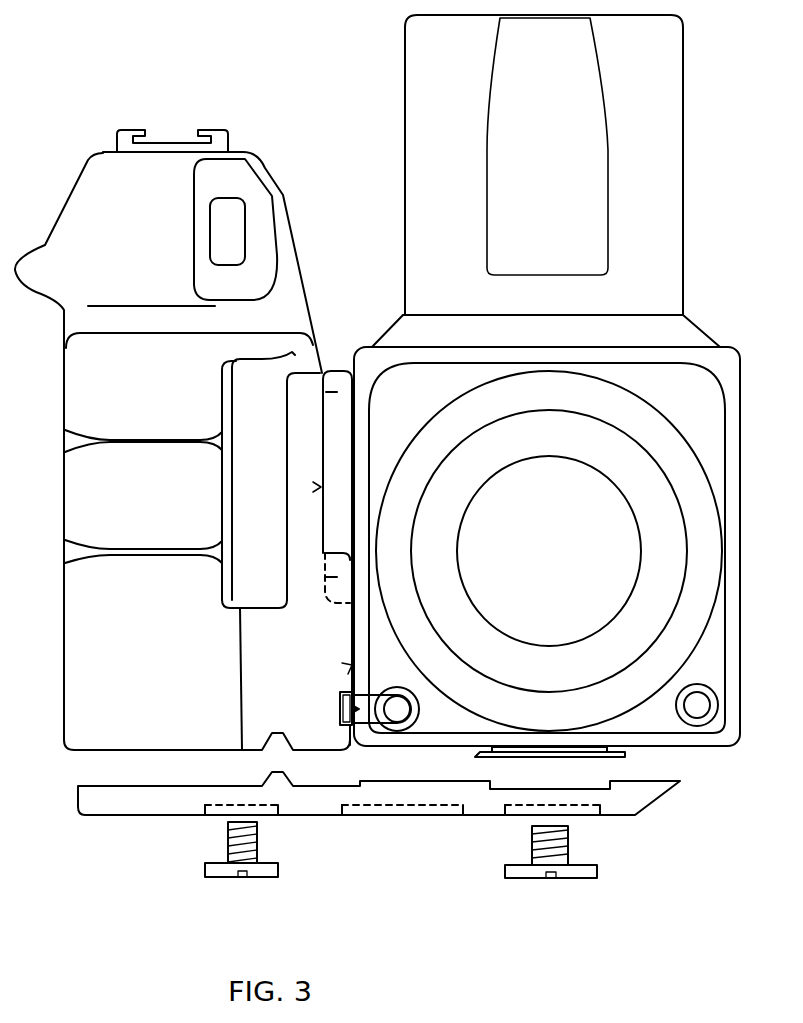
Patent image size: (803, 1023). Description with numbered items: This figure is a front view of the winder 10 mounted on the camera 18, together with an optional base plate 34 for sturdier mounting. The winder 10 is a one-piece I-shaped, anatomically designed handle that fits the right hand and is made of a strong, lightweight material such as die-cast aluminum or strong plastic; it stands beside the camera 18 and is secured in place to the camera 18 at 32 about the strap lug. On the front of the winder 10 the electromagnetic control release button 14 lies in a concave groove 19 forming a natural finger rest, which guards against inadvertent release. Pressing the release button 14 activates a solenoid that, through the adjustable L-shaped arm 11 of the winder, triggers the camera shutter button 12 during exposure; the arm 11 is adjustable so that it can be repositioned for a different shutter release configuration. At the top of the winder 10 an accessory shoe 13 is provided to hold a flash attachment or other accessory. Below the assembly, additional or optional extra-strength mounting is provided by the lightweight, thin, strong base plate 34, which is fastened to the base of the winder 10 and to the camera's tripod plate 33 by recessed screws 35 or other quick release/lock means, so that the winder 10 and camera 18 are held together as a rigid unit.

The winder 10 is at (88, 713).
The adjustable L-shaped arm 11 is at (372, 723).
The shutter button 12 is at (415, 716).
The accessory shoe 13 is at (213, 140).
The electromagnetic control release button 14 is at (230, 223).
The camera 18 is at (355, 605).
The concave groove 19 is at (253, 277).
The securing location 32 is at (352, 665).
The tripod plate 33 is at (622, 755).
The base plate 34 is at (592, 805).
The recessed screws 35 is at (505, 872).